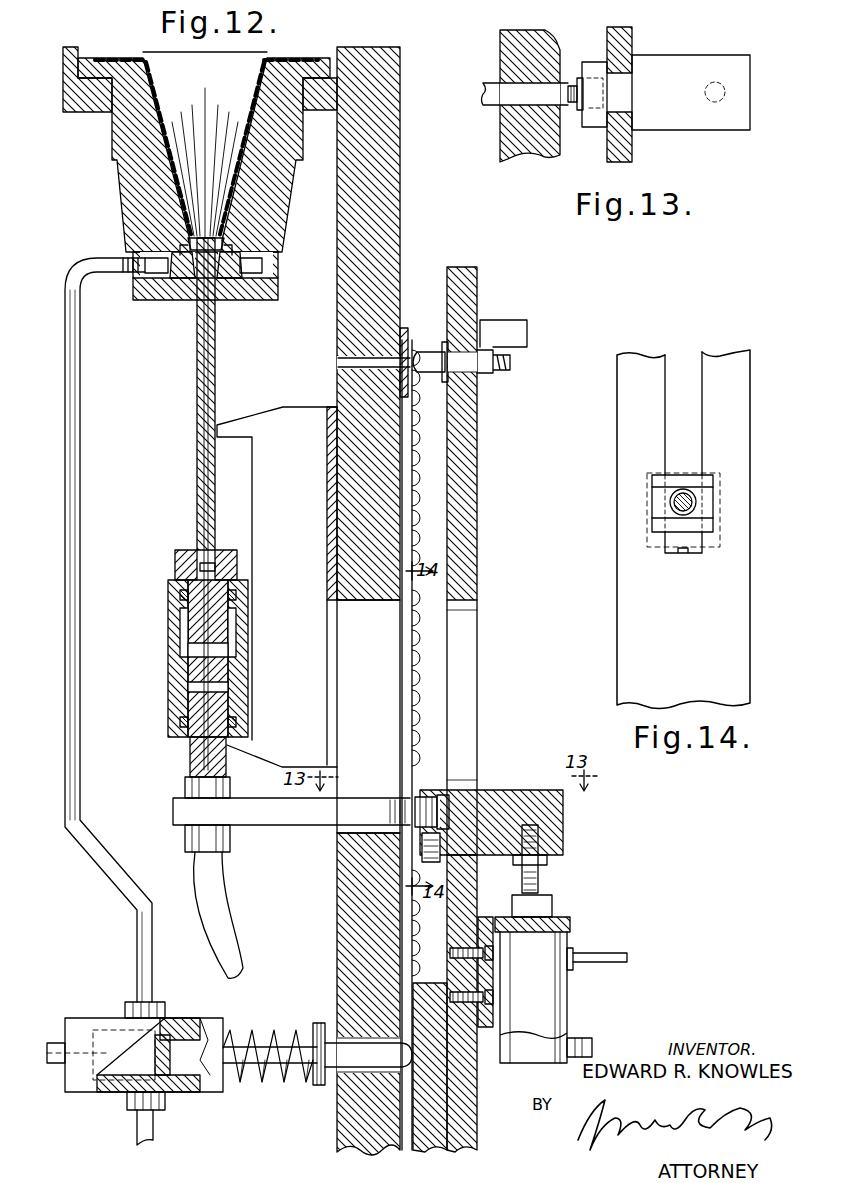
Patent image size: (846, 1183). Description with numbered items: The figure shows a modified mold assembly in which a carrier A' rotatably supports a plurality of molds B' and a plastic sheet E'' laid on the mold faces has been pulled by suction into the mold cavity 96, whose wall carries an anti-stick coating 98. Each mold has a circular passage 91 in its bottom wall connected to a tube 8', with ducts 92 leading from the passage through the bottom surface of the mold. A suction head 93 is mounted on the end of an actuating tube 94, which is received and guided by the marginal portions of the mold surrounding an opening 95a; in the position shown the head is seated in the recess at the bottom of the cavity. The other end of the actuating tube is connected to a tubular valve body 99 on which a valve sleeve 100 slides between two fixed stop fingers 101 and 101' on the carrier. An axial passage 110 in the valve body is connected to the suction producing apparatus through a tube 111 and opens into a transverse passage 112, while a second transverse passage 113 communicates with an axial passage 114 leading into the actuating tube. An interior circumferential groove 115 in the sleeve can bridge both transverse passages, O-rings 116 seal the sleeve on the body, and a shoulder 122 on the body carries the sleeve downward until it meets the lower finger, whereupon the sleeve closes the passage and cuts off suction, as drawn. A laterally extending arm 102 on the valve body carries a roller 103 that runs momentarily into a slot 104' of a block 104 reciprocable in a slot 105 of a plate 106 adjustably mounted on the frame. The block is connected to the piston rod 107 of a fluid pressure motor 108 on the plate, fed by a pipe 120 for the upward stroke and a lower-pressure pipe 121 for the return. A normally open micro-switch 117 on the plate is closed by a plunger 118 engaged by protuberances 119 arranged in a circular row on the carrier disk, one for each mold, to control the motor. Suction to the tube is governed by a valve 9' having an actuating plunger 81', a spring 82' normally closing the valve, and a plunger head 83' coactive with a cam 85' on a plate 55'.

In FIG. 12, the carrier A' is at (389, 589).
In FIG. 13, the carrier A' is at (530, 118).
In FIG. 12, the molds B' is at (191, 149).
In FIG. 12, the plastic sheet E'' is at (216, 36).
In FIG. 12, the mold cavity 96 is at (167, 213).
In FIG. 12, the coating 98 is at (150, 222).
In FIG. 12, the suction head 93 is at (225, 235).
In FIG. 12, the ducts 92 is at (253, 257).
In FIG. 12, the circular passage 91 is at (173, 274).
In FIG. 12, the opening 95a is at (240, 298).
In FIG. 12, the actuating tube 94 is at (213, 365).
In FIG. 12, the tube 8' is at (108, 630).
In FIG. 12, the stop finger 101 is at (277, 570).
In FIG. 12, the lower stop finger 101' is at (282, 765).
In FIG. 12, the tubular valve body 99 is at (227, 563).
In FIG. 12, the axial passage 114 is at (200, 563).
In FIG. 12, the valve sleeve 100 is at (237, 677).
In FIG. 12, the interior circumferential groove 115 is at (183, 617).
In FIG. 12, the shoulder 122 is at (180, 592).
In FIG. 12, the O-rings 116 is at (180, 720).
In FIG. 12, the transverse passage 113 is at (200, 653).
In FIG. 12, the transverse passage 112 is at (200, 688).
In FIG. 12, the passage 110 is at (210, 748).
In FIG. 12, the laterally extending arm 102 is at (298, 810).
In FIG. 13, the laterally extending arm 102 is at (497, 100).
In FIG. 12, the tube 111 is at (225, 933).
In FIG. 12, the cam 85' is at (386, 759).
In FIG. 12, the plate 106 is at (467, 537).
In FIG. 13, the plate 106 is at (625, 45).
In FIG. 14, the plate 106 is at (632, 605).
In FIG. 12, the slot 105 is at (467, 718).
In FIG. 13, the slot 105 is at (615, 110).
In FIG. 14, the slot 105 is at (675, 390).
In FIG. 12, the protuberances 119 is at (415, 370).
In FIG. 12, the plunger 118 is at (433, 350).
In FIG. 12, the micro-switch 117 is at (502, 325).
In FIG. 12, the block 104 is at (529, 826).
In FIG. 13, the block 104 is at (705, 114).
In FIG. 14, the block 104 is at (640, 523).
In FIG. 12, the roller 103 is at (407, 800).
In FIG. 13, the roller 103 is at (580, 78).
In FIG. 14, the roller 103 is at (697, 502).
In FIG. 12, the slot 104' is at (490, 781).
In FIG. 14, the slot 104' is at (638, 486).
In FIG. 12, the piston rod 107 is at (542, 877).
In FIG. 12, the fluid pressure motor 108 is at (557, 943).
In FIG. 12, the pipe 121 is at (620, 952).
In FIG. 12, the pipe 120 is at (592, 1040).
In FIG. 12, the plate 55' is at (433, 1042).
In FIG. 12, the valve 9' is at (135, 1053).
In FIG. 12, the actuating plunger 81' is at (268, 1033).
In FIG. 12, the spring 82' is at (271, 1081).
In FIG. 12, the plunger head 83' is at (317, 1098).